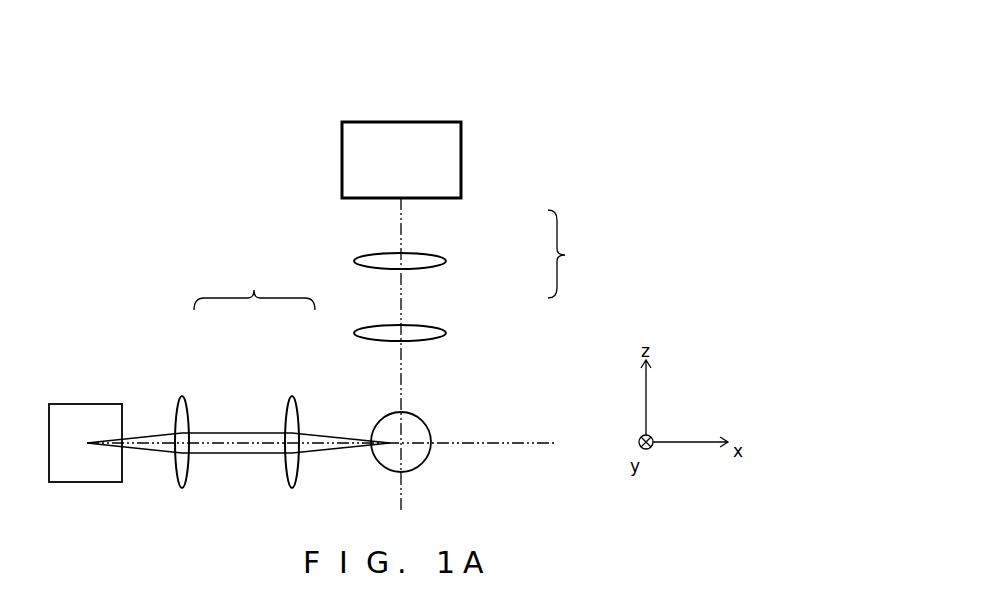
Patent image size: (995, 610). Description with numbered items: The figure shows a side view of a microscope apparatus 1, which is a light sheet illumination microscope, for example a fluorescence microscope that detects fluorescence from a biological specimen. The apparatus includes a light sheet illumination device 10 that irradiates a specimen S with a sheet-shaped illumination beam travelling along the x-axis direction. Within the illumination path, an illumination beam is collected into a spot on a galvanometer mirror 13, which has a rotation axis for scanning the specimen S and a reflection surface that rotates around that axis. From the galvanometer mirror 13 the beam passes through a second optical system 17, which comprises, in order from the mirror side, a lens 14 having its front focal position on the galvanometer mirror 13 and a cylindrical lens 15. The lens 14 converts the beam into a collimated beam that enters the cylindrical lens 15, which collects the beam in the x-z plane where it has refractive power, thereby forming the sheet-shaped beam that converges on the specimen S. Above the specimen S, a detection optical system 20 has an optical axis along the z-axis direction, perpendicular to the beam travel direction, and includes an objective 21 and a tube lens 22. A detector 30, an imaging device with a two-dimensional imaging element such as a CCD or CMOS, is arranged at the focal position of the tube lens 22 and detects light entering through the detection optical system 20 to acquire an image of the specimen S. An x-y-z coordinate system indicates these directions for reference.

The microscope apparatus 1 is at (678, 36).
The light sheet illumination device 10 is at (121, 232).
The galvanometer mirror 13 is at (102, 404).
The lens 14 is at (185, 396).
The cylindrical lens 15 is at (292, 396).
The second optical system 17 is at (254, 285).
The detection optical system 20 is at (581, 254).
The objective 21 is at (438, 327).
The tube lens 22 is at (438, 253).
The detector 30 is at (461, 138).
The specimen S is at (427, 417).